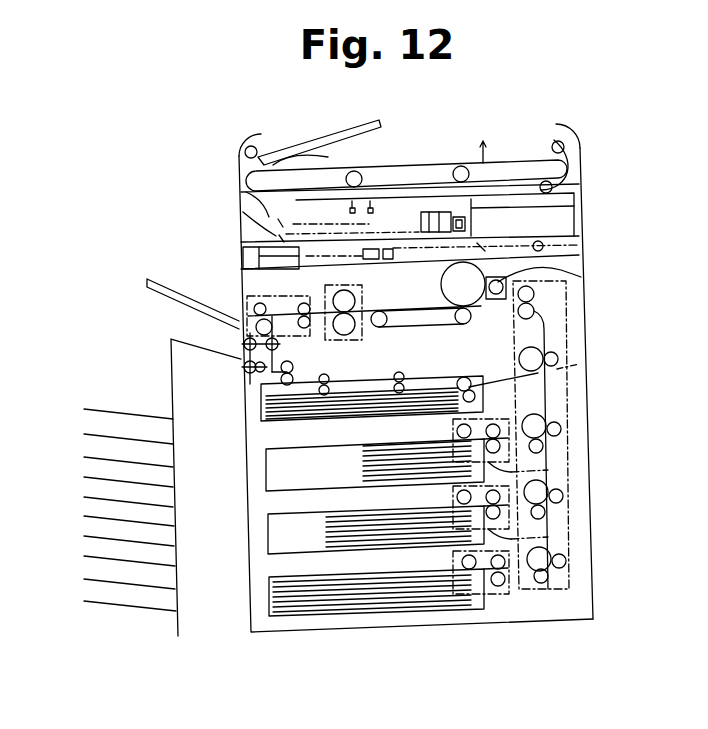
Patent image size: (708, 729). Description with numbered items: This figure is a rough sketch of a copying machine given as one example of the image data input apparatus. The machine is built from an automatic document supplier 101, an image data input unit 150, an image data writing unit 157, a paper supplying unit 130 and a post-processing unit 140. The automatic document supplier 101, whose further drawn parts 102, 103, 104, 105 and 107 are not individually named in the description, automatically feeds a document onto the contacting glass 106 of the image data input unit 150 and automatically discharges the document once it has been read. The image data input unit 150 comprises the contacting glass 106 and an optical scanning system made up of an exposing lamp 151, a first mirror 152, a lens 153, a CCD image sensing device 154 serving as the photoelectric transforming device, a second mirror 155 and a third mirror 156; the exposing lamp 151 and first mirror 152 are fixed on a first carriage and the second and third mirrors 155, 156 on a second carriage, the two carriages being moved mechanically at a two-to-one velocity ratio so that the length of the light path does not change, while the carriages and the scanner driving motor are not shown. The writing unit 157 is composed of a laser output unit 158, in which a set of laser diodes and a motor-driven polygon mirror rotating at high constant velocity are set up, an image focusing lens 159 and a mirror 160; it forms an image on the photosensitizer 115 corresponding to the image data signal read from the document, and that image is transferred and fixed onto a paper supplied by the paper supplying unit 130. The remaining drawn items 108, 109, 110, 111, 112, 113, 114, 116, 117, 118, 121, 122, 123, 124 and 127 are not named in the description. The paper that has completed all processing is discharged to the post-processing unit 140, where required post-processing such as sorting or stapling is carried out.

The automatic document supplier 101 is at (580, 150).
The document feed tray 102 is at (320, 133).
The feed roller 103 is at (257, 150).
The conveying belt 104 is at (430, 170).
The discharge roller 105 is at (553, 144).
The contacting glass 106 is at (553, 188).
The guide plate 107 is at (316, 156).
The paper cassette 108 is at (295, 467).
The paper cassette 109 is at (297, 533).
The paper cassette 110 is at (297, 597).
The paper feed unit 111 is at (567, 472).
The paper feed unit 112 is at (572, 538).
The paper feed unit 113 is at (497, 595).
The conveying path 114 is at (578, 365).
The photosensitizer 115 is at (474, 308).
The transfer belt 116 is at (455, 324).
The fixing unit 117 is at (338, 288).
The discharge roller unit 118 is at (294, 296).
The paper cassette 121 is at (285, 400).
The conveying roller 122 is at (276, 323).
The discharge rollers 123 is at (252, 337).
The discharge tray 124 is at (188, 310).
The vertical conveying unit 127 is at (580, 278).
The paper supplying unit 130 is at (584, 390).
The post-processing unit 140 is at (168, 367).
The image data input unit 150 is at (572, 217).
The exposing lamp 151 is at (368, 209).
The first mirror 152 is at (373, 214).
The lens 153 is at (452, 220).
The CCD image sensing device 154 is at (466, 230).
The second mirror 155 is at (252, 198).
The third mirror 156 is at (240, 213).
The image data writing unit 157 is at (579, 246).
The laser output unit 158 is at (242, 248).
The image focusing lens 159 is at (380, 262).
The mirror 160 is at (486, 250).